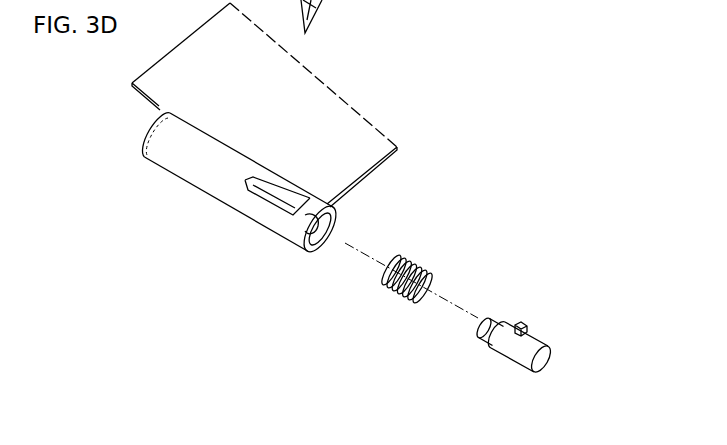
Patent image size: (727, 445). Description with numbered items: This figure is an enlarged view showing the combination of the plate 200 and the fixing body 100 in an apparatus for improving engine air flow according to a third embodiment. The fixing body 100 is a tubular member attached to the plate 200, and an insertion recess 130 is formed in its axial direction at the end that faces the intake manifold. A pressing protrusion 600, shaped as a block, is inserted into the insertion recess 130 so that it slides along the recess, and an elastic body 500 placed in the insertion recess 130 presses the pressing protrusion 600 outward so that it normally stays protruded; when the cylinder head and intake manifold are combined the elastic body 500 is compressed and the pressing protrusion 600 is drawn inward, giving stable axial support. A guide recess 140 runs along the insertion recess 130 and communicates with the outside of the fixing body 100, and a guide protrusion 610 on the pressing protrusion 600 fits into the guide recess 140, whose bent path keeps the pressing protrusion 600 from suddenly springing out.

The fixing body 100 is at (215, 222).
The insertion recess 130 is at (313, 238).
The guide recess 140 is at (283, 203).
The plate 200 is at (337, 117).
The elastic body 500 is at (408, 262).
The pressing protrusion 600 is at (540, 337).
The guide protrusion 610 is at (521, 321).